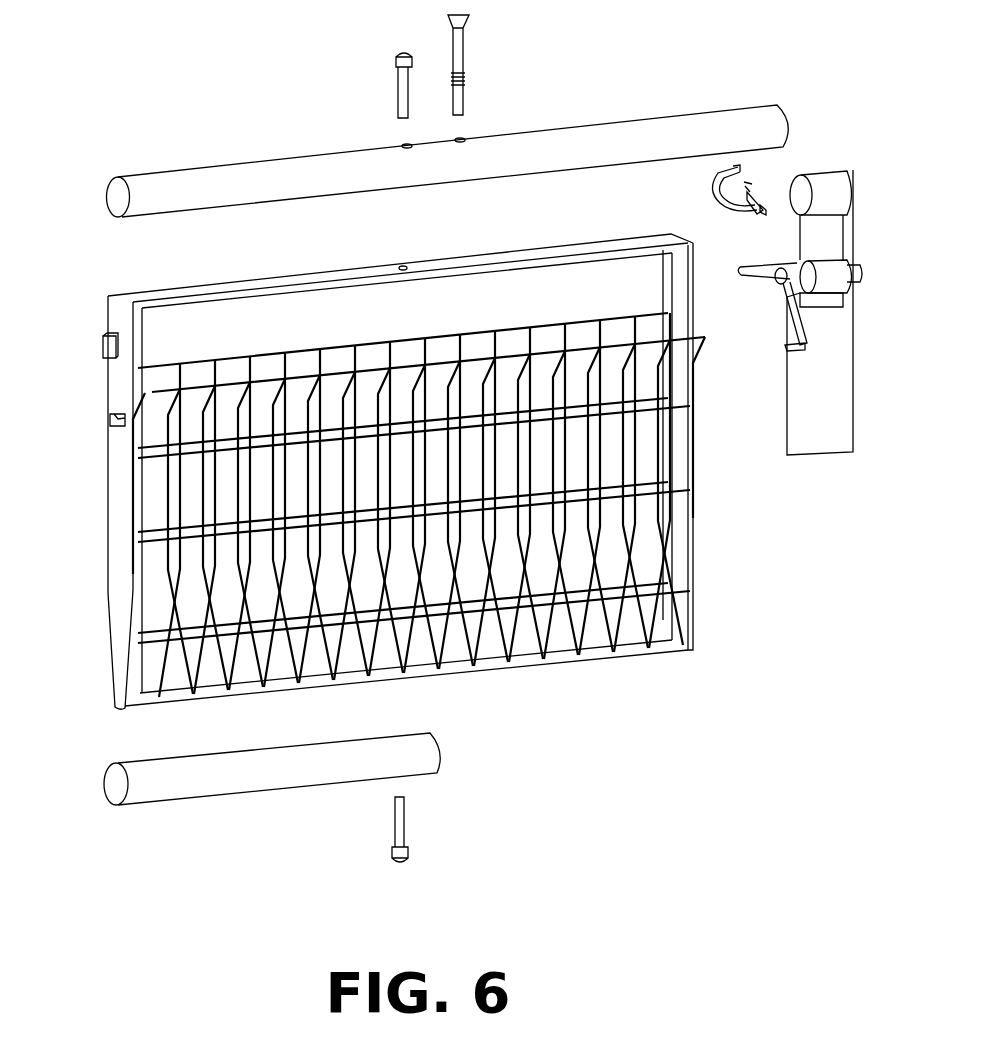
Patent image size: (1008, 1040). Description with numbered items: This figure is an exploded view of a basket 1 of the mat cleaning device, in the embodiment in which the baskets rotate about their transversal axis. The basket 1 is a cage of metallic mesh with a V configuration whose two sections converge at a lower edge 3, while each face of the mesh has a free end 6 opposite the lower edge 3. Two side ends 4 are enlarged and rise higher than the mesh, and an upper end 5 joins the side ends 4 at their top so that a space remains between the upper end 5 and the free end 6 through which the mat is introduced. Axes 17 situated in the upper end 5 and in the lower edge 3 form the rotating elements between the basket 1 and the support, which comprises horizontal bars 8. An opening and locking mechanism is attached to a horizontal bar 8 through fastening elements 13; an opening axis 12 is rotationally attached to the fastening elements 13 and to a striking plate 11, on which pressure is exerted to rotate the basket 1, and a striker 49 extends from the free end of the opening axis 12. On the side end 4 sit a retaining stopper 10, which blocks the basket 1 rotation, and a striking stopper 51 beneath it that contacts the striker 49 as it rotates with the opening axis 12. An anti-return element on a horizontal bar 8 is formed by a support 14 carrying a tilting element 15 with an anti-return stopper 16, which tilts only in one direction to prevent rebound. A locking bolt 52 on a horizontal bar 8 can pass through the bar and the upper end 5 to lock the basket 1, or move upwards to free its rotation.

The basket 1 is at (438, 489).
The lower edge 3 is at (419, 489).
The side end 4 is at (118, 322).
The upper end 5 is at (437, 265).
The free end 6 is at (317, 348).
The horizontal bar 8 is at (534, 146).
The retaining stopper 10 is at (103, 343).
The striking plate 11 is at (835, 413).
The opening axis 12 is at (820, 245).
The fastening element 13 is at (822, 183).
The support 14 is at (760, 210).
The tilting element 15 is at (747, 213).
The anti-return stopper 16 is at (757, 208).
The axis 17 is at (405, 88).
The striker 49 is at (787, 353).
The striking stopper 51 is at (115, 420).
The locking bolt 52 is at (758, 277).